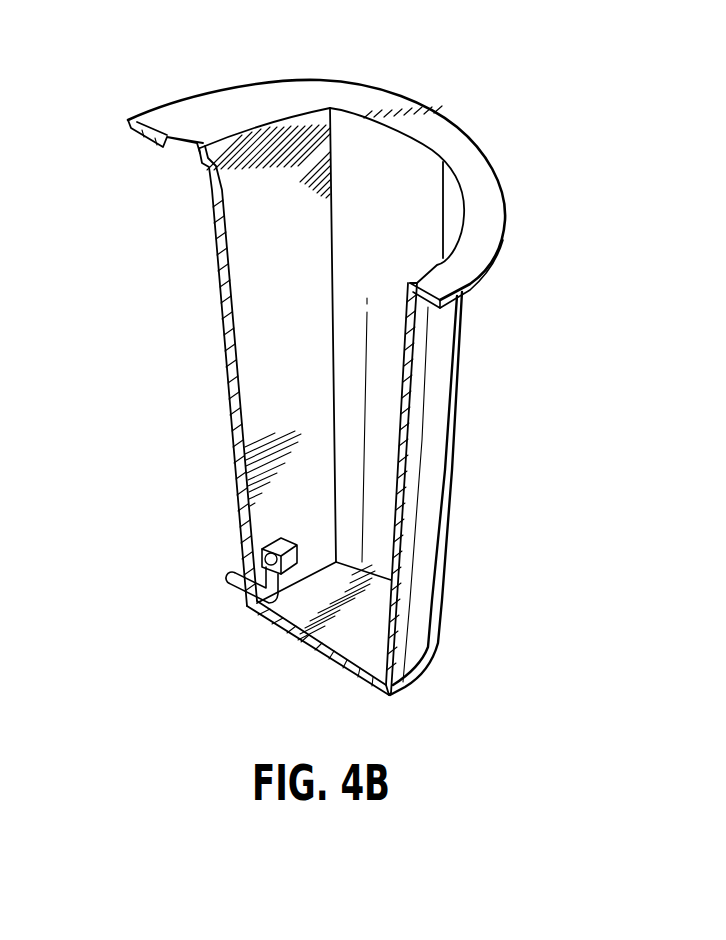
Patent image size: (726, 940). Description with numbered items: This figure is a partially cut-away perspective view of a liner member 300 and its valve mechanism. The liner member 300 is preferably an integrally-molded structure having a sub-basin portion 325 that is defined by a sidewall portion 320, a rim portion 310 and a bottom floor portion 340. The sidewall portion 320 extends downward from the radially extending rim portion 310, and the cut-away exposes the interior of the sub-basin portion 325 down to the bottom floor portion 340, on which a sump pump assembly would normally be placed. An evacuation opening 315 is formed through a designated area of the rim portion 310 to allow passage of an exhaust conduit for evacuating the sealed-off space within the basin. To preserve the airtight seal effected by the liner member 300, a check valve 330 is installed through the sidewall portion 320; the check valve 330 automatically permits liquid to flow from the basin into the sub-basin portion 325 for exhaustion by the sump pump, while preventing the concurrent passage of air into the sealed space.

The liner member 300 is at (456, 129).
The rim portion 310 is at (289, 101).
The evacuation opening 315 is at (183, 153).
The sidewall portion 320 is at (440, 343).
The sub-basin portion 325 is at (383, 408).
The check valve 330 is at (297, 574).
The bottom floor portion 340 is at (372, 648).